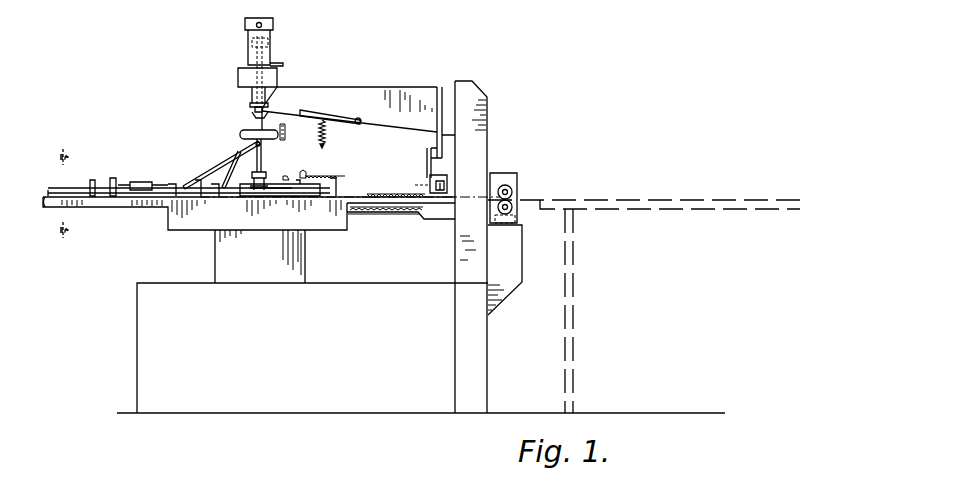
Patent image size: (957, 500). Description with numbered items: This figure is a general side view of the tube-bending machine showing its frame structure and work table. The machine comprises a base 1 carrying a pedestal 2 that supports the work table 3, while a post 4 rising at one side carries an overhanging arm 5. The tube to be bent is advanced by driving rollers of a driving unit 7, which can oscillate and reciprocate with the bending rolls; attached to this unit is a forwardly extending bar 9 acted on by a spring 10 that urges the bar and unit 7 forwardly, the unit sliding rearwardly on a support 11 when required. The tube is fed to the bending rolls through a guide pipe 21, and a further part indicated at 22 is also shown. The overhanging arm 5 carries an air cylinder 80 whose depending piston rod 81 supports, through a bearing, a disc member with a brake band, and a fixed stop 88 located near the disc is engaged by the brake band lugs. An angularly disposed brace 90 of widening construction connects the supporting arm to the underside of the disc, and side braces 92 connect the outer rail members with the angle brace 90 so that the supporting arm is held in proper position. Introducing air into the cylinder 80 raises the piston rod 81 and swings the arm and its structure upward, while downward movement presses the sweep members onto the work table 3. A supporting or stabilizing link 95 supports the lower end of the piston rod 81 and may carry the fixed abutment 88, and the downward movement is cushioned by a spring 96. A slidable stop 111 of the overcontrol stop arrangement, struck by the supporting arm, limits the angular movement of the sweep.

The base 1 is at (146, 354).
The pedestal 2 is at (298, 250).
The work table 3 is at (369, 194).
The post 4 is at (488, 141).
The overhanging arm 5 is at (349, 88).
The driving unit 7 is at (518, 178).
The bar 9 is at (447, 235).
The spring 10 is at (400, 216).
The support 11 is at (522, 255).
The guide pipe 21 is at (247, 108).
The direction arrow 22 is at (222, 124).
The air cylinder 80 is at (268, 35).
The piston rod 81 is at (254, 109).
The fixed stop 88 is at (282, 138).
The angularly disposed brace 90 is at (208, 170).
The side braces 92 is at (232, 172).
The supporting or stabilizing link 95 is at (312, 116).
The spring 96 is at (328, 140).
The slidable stop 111 is at (446, 175).